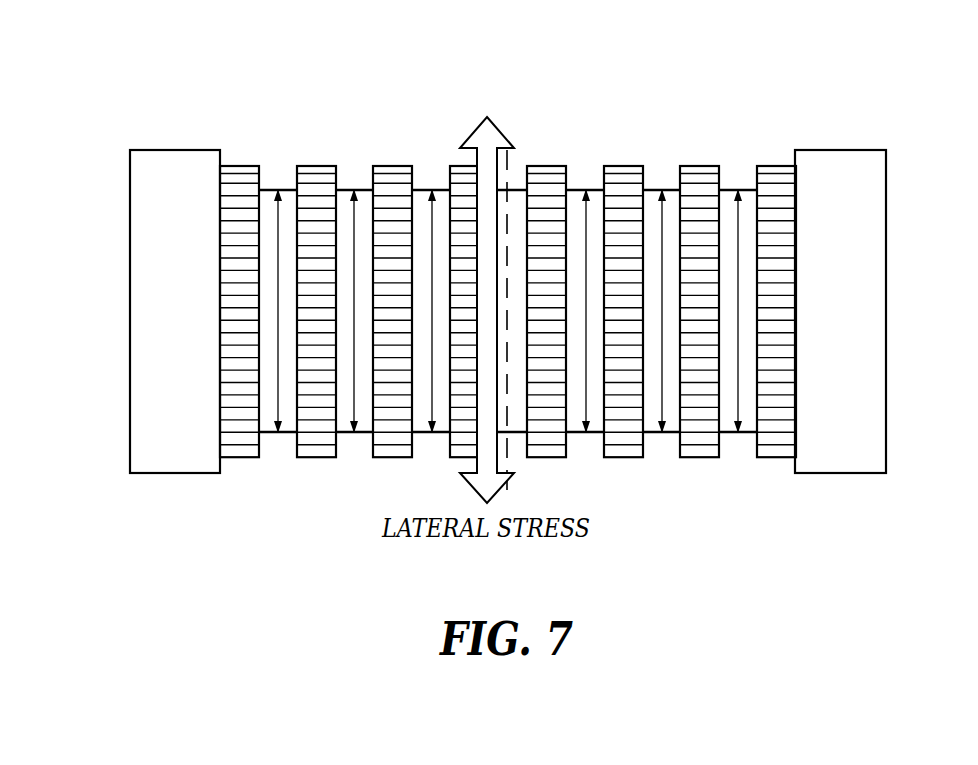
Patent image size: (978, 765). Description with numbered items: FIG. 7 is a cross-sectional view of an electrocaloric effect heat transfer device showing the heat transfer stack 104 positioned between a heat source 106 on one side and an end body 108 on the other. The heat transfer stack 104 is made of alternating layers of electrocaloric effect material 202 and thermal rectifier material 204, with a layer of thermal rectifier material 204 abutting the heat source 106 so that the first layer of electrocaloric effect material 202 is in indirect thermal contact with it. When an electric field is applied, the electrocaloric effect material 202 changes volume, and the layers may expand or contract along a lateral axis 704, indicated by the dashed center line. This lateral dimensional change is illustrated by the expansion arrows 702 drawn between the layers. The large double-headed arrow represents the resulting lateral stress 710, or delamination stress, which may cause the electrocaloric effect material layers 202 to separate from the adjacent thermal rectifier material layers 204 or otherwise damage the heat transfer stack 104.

The heat transfer stack 104 is at (576, 248).
The heat source 106 is at (146, 258).
The second end plate 108 is at (862, 257).
The electrocaloric effect material 202 is at (437, 187).
The thermal rectifier material 204 is at (542, 180).
The expansion arrows 702 is at (662, 245).
The lateral axis 704 is at (508, 131).
The lateral stress 710 is at (483, 485).